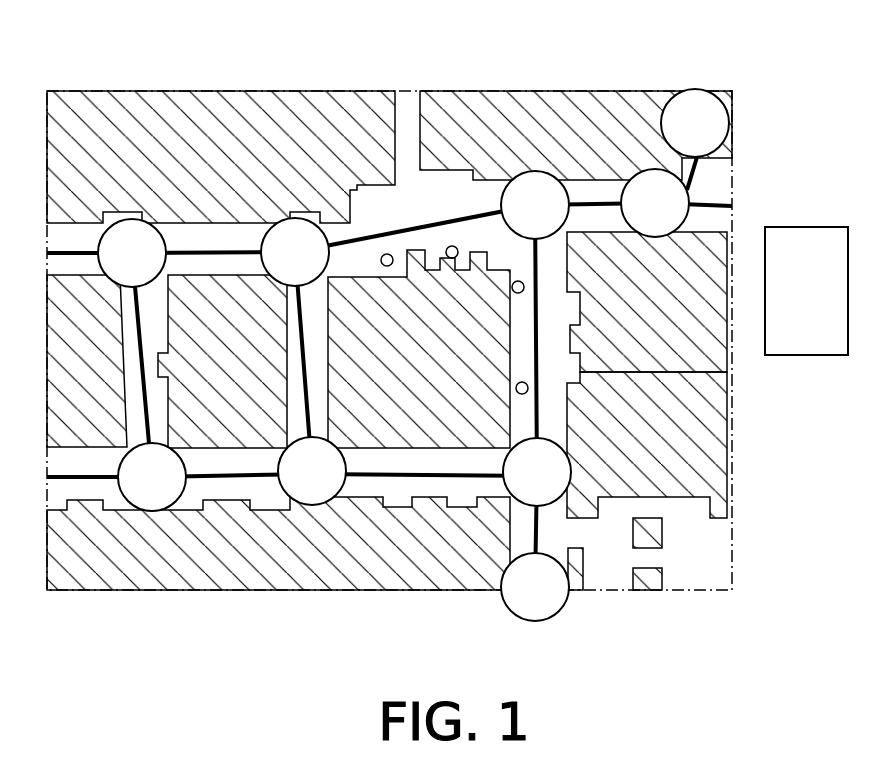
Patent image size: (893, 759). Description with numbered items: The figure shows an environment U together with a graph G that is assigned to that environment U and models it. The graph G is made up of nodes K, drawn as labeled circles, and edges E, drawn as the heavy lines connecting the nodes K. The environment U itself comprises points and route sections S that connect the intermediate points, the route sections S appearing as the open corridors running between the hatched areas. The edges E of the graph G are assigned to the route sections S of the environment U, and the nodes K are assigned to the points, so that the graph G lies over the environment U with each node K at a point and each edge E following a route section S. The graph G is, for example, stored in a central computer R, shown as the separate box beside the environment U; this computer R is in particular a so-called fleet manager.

The node K is at (123, 266).
The edge E is at (370, 222).
The route section S is at (347, 222).
The graph G is at (425, 209).
The environment U is at (170, 568).
The central computer R is at (790, 309).